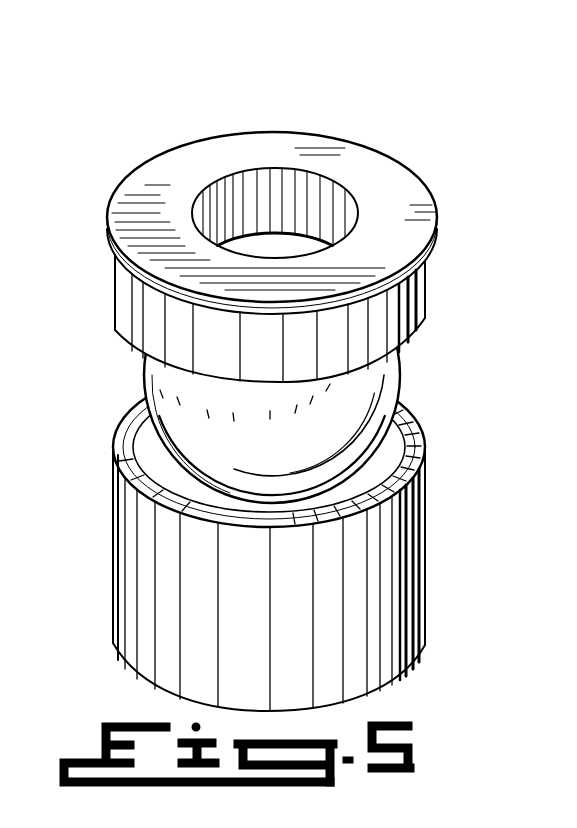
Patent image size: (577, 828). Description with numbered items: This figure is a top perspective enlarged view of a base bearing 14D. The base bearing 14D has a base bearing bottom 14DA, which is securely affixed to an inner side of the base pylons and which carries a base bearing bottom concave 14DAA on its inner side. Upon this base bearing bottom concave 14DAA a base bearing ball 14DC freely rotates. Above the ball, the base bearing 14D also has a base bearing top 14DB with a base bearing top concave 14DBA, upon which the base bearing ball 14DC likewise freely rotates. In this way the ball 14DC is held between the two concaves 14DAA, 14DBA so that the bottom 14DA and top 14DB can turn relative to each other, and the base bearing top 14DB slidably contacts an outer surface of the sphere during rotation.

The base bearing 14D is at (312, 46).
The base bearing top 14DB is at (400, 233).
The base bearing top concave 14DBA is at (130, 340).
The base bearing ball 14DC is at (343, 432).
The base bearing bottom 14DA is at (408, 575).
The base bearing bottom concave 14DAA is at (382, 452).